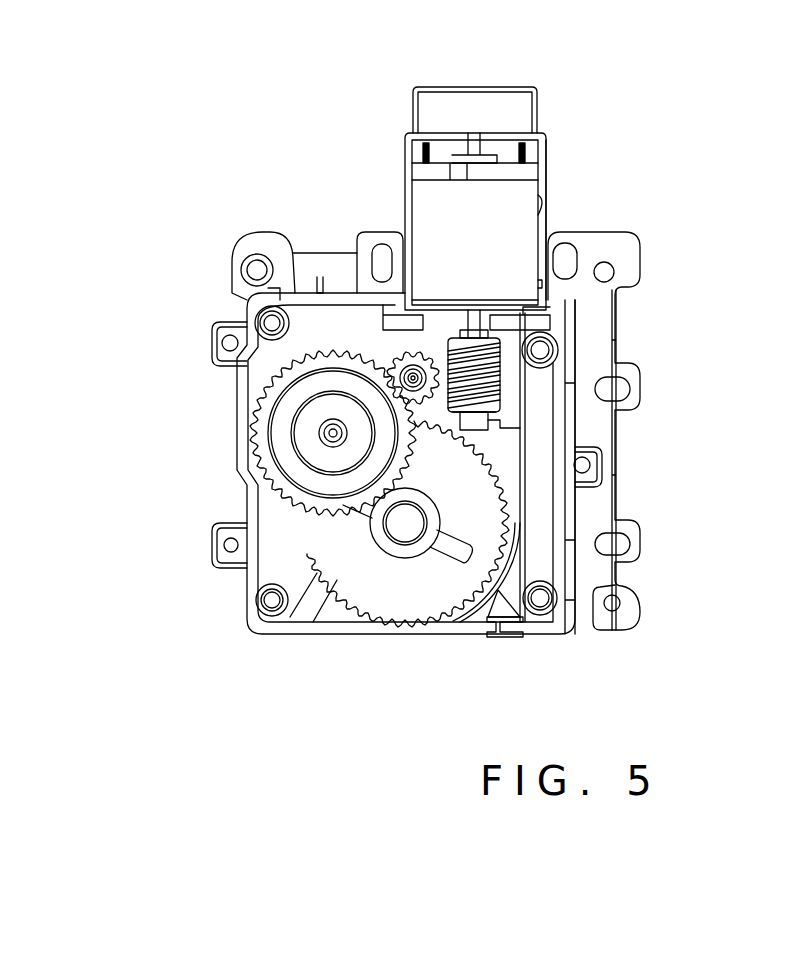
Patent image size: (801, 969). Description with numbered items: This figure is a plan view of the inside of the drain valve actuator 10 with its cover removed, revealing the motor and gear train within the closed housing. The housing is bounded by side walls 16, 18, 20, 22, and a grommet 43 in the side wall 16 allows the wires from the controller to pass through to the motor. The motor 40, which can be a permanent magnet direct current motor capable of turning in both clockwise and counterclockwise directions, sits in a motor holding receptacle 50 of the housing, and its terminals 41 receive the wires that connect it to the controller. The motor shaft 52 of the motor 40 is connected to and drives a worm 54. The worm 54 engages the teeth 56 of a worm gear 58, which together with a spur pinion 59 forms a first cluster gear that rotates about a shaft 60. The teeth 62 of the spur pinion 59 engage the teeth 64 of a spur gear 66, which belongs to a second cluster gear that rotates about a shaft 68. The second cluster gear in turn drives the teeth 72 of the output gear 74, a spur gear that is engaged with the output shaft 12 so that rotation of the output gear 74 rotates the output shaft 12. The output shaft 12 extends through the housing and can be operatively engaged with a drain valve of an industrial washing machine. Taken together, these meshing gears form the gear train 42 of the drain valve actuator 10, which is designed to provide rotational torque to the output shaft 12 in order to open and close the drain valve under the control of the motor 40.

The drain valve actuator 10 is at (189, 66).
The output shaft 12 is at (393, 543).
The side wall 16 is at (280, 640).
The side wall 18 is at (570, 570).
The side wall 20 is at (290, 245).
The side wall 22 is at (247, 508).
The motor 40 is at (517, 197).
The terminals 41 is at (420, 152).
The gear train 42 is at (410, 708).
The grommet 43 is at (520, 640).
The motor holding receptacle 50 is at (546, 207).
The motor shaft 52 is at (492, 430).
The worm 54 is at (500, 405).
The teeth 56 is at (425, 355).
The worm gear 58 is at (443, 348).
The spur pinion 59 is at (400, 368).
The shaft 60 is at (448, 342).
The teeth 62 is at (412, 378).
The teeth 64 is at (292, 437).
The spur gear 66 is at (268, 400).
The shaft 68 is at (330, 433).
The teeth 72 is at (443, 625).
The output gear 74 is at (395, 598).